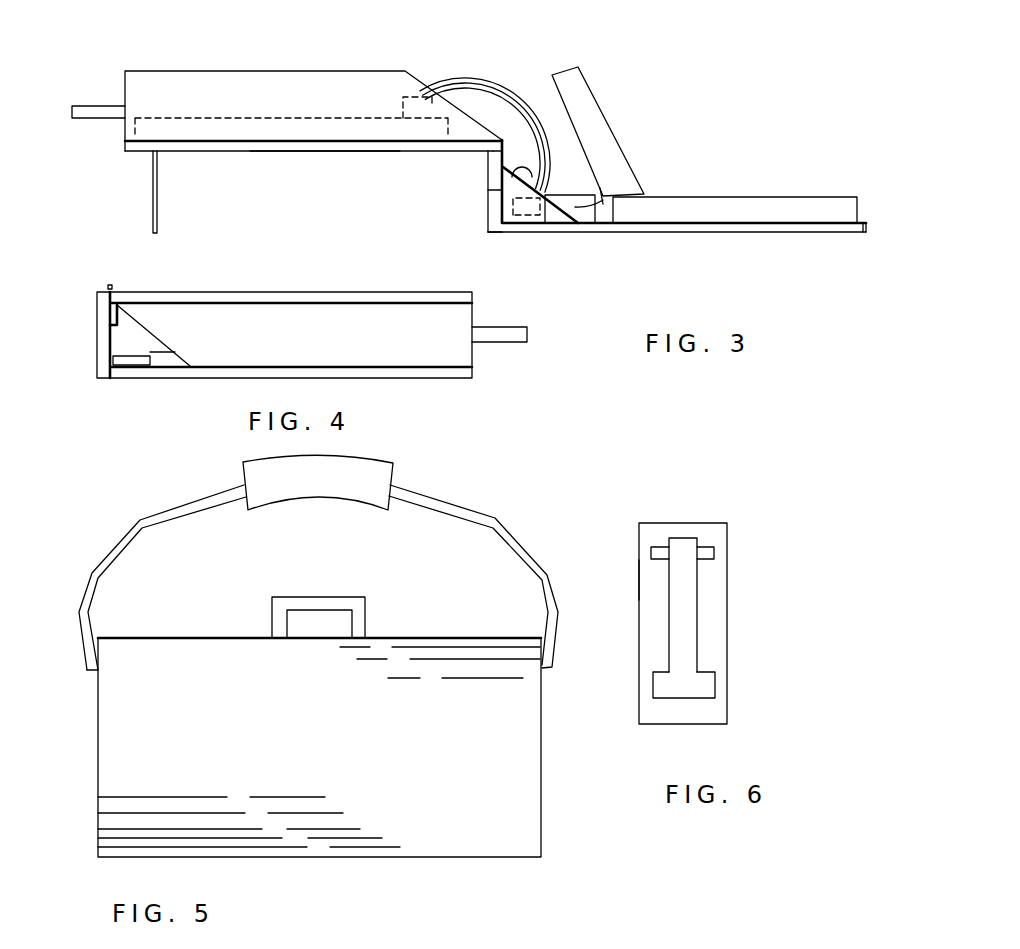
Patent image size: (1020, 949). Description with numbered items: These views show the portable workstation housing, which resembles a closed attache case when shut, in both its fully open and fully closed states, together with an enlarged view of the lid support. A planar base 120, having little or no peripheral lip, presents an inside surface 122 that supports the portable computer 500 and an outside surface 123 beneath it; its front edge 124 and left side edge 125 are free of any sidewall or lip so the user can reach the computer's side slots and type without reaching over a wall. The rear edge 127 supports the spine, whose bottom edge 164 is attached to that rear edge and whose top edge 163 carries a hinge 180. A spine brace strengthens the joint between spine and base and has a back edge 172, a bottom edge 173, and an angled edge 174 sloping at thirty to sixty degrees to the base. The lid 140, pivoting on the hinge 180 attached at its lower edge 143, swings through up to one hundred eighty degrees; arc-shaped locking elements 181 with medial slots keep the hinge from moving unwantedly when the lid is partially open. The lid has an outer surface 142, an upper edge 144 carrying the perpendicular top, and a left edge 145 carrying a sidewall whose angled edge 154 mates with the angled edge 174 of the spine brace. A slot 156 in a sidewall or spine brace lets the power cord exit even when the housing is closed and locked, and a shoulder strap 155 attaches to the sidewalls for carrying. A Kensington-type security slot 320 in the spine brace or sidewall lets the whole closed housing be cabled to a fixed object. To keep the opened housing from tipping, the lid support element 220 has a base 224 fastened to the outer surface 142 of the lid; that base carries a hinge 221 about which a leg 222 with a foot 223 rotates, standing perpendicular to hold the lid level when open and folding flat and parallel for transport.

In FIG. 4, the base 120 is at (407, 378).
In FIG. 3, the inside surface 122 is at (743, 222).
In FIG. 3, the outside surface 123 is at (760, 232).
In FIG. 3, the front edge 124 is at (863, 230).
In FIG. 3, the left side edge 125 is at (638, 228).
In FIG. 3, the rear edge 127 is at (503, 230).
In FIG. 3, the lid 140 is at (313, 111).
In FIG. 4, the lid 140 is at (322, 291).
In FIG. 3, the outer surface 142 is at (203, 152).
In FIG. 3, the lower edge 143 is at (503, 165).
In FIG. 3, the upper edge 144 is at (120, 147).
In FIG. 3, the left edge 145 is at (290, 145).
In FIG. 3, the angled edge 154 is at (418, 74).
In FIG. 4, the angled edge 154 is at (143, 322).
In FIG. 5, the shoulder strap 155 is at (435, 493).
In FIG. 4, the slot 156 is at (113, 315).
In FIG. 3, the top edge 163 is at (495, 153).
In FIG. 3, the bottom edge 164 is at (493, 233).
In FIG. 3, the back edge 172 is at (498, 193).
In FIG. 3, the bottom edge 173 is at (558, 230).
In FIG. 3, the angled edge 174 is at (503, 167).
In FIG. 4, the angled edge 174 is at (163, 352).
In FIG. 3, the hinge 180 is at (495, 153).
In FIG. 4, the hinge 180 is at (108, 283).
In FIG. 3, the arc-shaped locking element 181 is at (475, 78).
In FIG. 3, the lid support element 220 is at (145, 203).
In FIG. 6, the lid support element 220 is at (680, 512).
In FIG. 6, the hinge 221 is at (705, 553).
In FIG. 6, the leg 222 is at (697, 610).
In FIG. 6, the foot 223 is at (713, 688).
In FIG. 6, the base 224 is at (640, 575).
In FIG. 4, the security slot 320 is at (130, 362).
In FIG. 3, the portable computer 500 is at (718, 210).